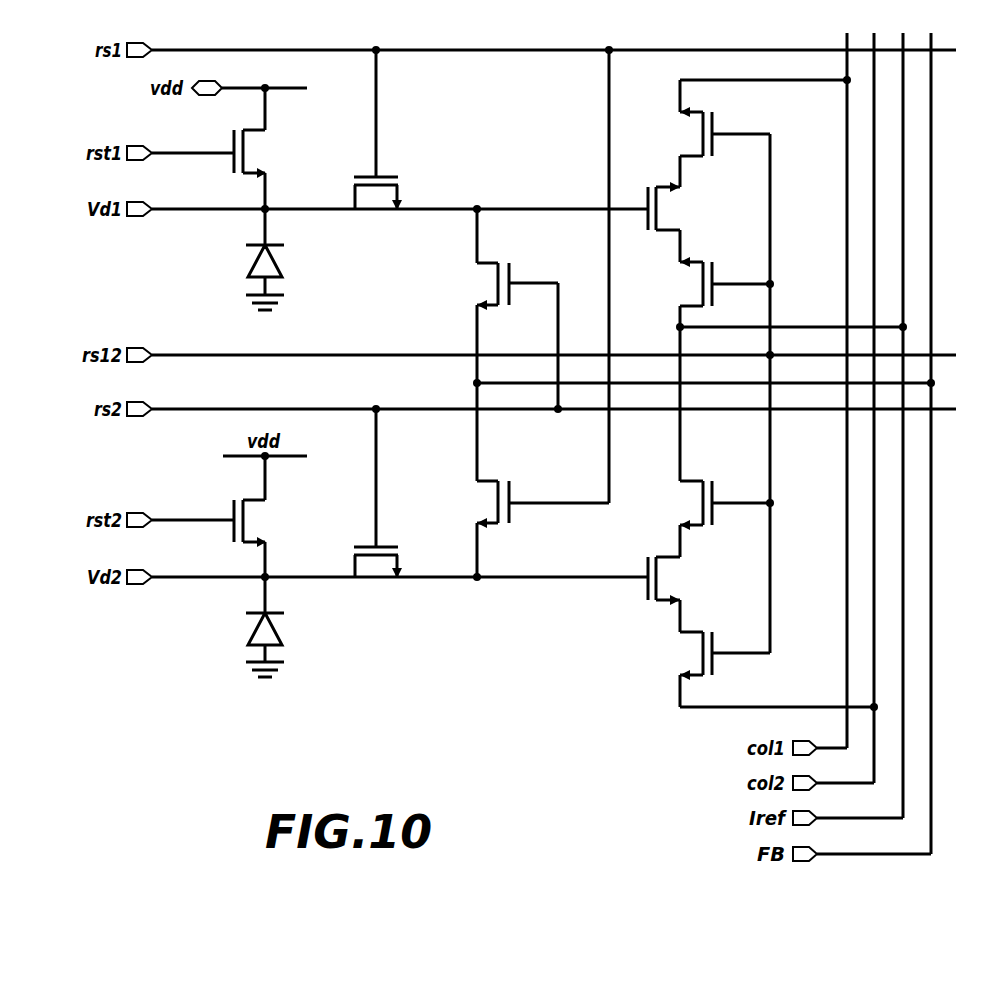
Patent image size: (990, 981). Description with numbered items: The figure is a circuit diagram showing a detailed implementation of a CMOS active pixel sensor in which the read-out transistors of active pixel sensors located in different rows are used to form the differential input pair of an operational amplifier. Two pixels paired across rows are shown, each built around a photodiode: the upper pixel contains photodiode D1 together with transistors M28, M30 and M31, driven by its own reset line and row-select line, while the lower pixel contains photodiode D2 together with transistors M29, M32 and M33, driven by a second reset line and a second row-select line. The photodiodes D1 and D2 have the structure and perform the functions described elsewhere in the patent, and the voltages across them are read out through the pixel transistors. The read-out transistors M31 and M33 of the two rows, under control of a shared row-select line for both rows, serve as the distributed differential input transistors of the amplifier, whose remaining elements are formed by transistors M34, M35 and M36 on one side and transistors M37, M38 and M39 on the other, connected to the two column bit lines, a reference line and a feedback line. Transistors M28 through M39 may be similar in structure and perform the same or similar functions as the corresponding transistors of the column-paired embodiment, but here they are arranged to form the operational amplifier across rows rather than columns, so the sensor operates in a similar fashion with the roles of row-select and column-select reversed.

The transistor M28 is at (269, 154).
The transistor M29 is at (269, 523).
The transistor M30 is at (378, 205).
The transistor M31 is at (475, 286).
The transistor M32 is at (378, 575).
The transistor M33 is at (475, 504).
The transistor M34 is at (706, 131).
The transistor M35 is at (683, 206).
The transistor M36 is at (706, 281).
The transistor M37 is at (706, 505).
The transistor M38 is at (683, 581).
The transistor M39 is at (706, 656).
The photodiode D1 is at (282, 277).
The photodiode D2 is at (282, 645).